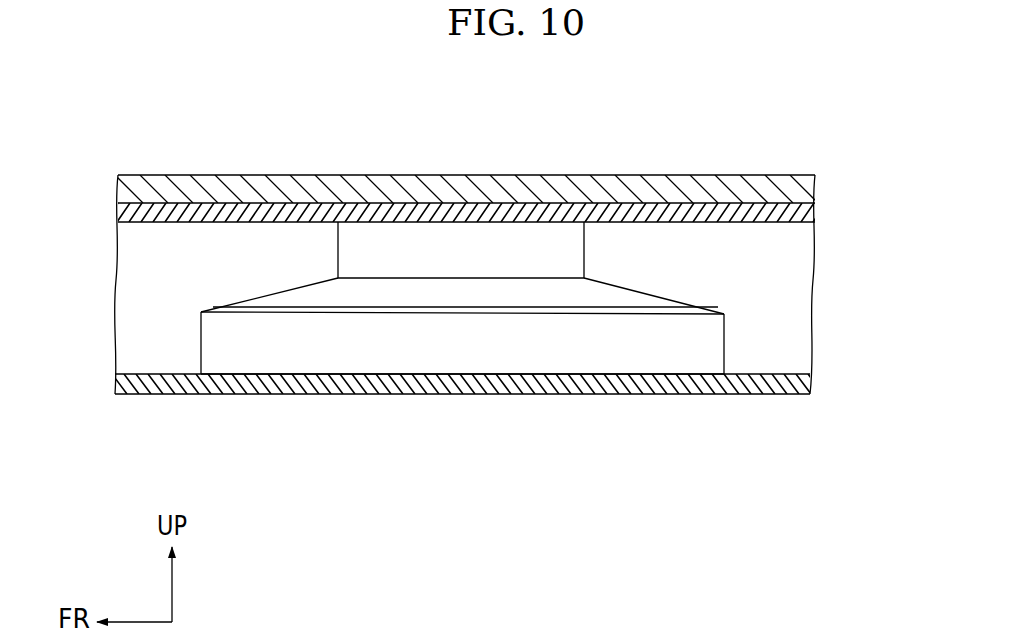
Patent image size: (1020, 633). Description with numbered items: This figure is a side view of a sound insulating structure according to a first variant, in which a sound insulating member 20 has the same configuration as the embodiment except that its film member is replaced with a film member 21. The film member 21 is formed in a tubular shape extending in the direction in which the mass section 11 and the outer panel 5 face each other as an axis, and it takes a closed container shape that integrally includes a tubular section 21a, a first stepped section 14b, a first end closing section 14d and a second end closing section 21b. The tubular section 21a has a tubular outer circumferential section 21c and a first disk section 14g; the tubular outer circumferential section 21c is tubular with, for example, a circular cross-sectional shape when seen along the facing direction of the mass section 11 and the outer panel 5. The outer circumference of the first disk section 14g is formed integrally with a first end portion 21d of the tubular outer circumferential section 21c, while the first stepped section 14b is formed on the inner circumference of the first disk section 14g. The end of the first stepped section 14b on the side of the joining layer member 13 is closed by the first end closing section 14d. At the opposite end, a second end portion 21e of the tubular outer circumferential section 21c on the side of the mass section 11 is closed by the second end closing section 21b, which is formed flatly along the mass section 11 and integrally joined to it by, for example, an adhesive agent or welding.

The outer panel 5 is at (466, 151).
The mass section 11 is at (578, 394).
The joining layer member 13 is at (745, 200).
The first stepped section 14b is at (587, 247).
The first end closing section 14d is at (508, 222).
The first disk section 14g is at (658, 292).
The sound insulating member 20 is at (466, 179).
The film member 21 is at (503, 293).
The tubular section 21a is at (581, 289).
The second end closing section 21b is at (380, 376).
The tubular outer circumferential section 21c is at (725, 337).
The first end portion 21d is at (201, 312).
The second end portion 21e is at (200, 374).